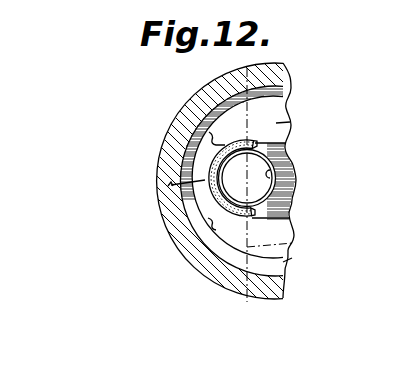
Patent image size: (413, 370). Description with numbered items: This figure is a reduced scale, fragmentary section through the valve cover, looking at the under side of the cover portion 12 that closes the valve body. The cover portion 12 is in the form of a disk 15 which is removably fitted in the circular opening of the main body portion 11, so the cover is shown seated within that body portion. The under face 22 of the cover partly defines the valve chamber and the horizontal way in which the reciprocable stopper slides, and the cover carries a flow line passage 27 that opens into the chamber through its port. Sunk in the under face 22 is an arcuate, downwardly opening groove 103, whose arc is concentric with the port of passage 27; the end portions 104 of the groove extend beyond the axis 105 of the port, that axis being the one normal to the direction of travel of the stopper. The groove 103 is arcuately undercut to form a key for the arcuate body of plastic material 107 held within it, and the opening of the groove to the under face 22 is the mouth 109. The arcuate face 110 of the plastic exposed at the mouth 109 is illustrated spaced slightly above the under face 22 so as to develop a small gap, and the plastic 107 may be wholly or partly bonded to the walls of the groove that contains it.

The main body portion 11 is at (168, 150).
The cover portion 12 is at (284, 110).
The disk 15 is at (292, 258).
The under face 22 is at (276, 123).
The flow line passage 27 is at (271, 176).
The arcuate groove 103 is at (214, 208).
The end portions 104 is at (286, 148).
The axis 105 is at (293, 243).
The arcuate body of plastic material 107 is at (205, 104).
The mouth 109 is at (212, 200).
The face 110 is at (168, 186).